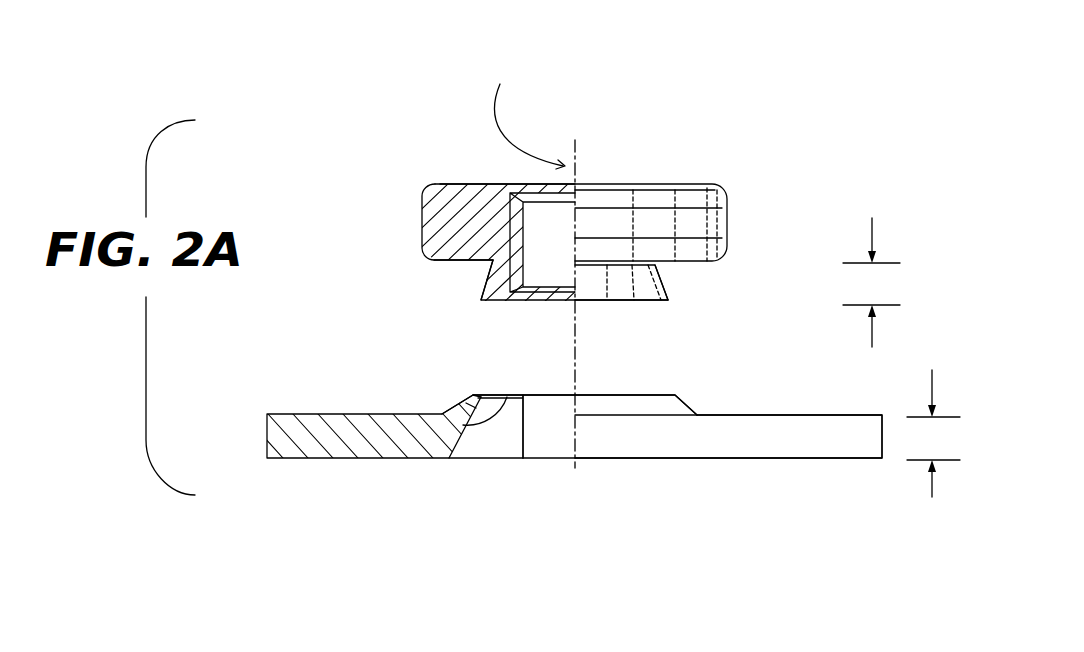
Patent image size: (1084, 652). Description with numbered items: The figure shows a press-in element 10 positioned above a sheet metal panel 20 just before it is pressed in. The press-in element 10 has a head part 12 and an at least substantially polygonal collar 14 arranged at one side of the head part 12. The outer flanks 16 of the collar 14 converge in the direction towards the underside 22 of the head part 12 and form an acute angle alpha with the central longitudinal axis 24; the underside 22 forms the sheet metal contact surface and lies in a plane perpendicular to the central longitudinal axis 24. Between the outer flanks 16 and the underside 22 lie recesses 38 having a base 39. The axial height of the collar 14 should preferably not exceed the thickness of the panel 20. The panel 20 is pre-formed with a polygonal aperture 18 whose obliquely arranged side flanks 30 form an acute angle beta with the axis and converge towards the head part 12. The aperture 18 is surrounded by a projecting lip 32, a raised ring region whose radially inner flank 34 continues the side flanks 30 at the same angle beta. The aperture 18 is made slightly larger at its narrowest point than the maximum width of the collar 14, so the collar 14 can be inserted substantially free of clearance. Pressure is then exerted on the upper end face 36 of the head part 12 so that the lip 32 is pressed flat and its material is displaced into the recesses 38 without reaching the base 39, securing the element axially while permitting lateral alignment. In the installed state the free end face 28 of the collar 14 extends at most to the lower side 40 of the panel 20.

The press-in element 10 is at (760, 176).
The head part 12 is at (422, 223).
The polygonal collar 14 is at (668, 298).
The outer flanks 16 is at (484, 288).
The polygonal aperture 18 is at (495, 452).
The panel 20 is at (338, 458).
The underside of the head part 22 is at (443, 262).
The central longitudinal axis 24 is at (576, 146).
The free end face of the collar 28 is at (618, 303).
The side flanks 30 is at (472, 445).
The projecting lip 32 is at (457, 405).
The radially inner flank of the lip 34 is at (506, 396).
The upper end face of the head part 36 is at (478, 184).
The recesses 38 is at (662, 266).
The base of the recesses 39 is at (492, 265).
The lower side of the sheet metal part 40 is at (680, 446).